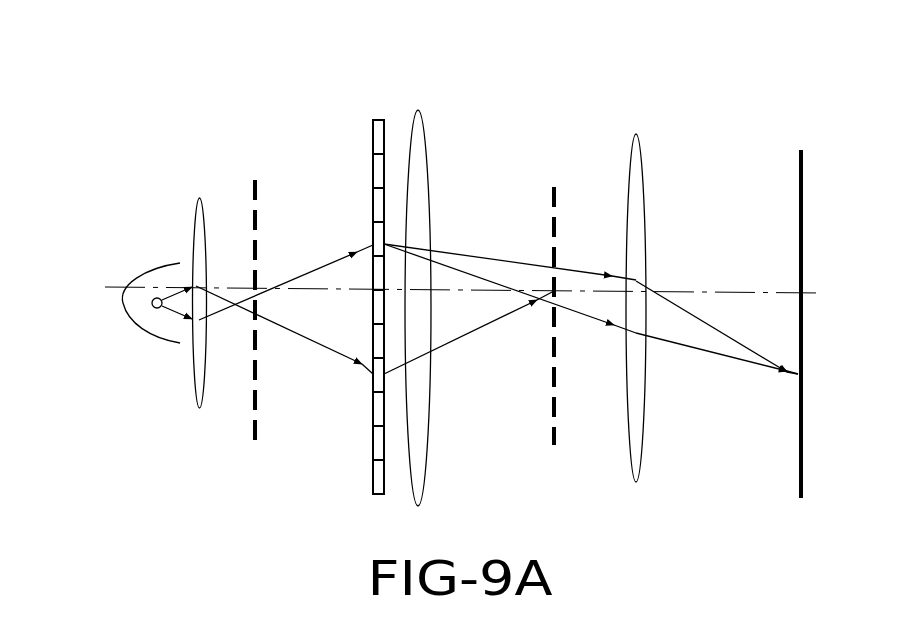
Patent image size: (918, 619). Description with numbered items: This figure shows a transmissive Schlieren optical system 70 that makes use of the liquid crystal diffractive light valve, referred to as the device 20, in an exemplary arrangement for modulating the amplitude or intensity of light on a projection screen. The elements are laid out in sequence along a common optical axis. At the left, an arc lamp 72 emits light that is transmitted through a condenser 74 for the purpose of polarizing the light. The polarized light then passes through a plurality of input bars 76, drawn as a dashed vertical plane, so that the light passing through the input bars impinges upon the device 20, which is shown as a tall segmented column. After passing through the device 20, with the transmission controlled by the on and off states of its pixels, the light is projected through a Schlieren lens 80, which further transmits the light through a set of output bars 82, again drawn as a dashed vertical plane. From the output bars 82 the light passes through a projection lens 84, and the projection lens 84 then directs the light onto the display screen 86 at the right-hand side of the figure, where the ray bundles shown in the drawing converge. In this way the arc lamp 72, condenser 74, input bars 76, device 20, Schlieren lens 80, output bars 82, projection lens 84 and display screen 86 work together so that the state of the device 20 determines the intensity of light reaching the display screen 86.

The Schlieren optical system 70 is at (648, 74).
The arc lamp 72 is at (147, 330).
The condenser 74 is at (190, 386).
The input bars 76 is at (249, 441).
The device 20 is at (369, 437).
The Schlieren lens 80 is at (429, 410).
The output bars 82 is at (566, 184).
The projection lens 84 is at (643, 408).
The display screen 86 is at (808, 160).